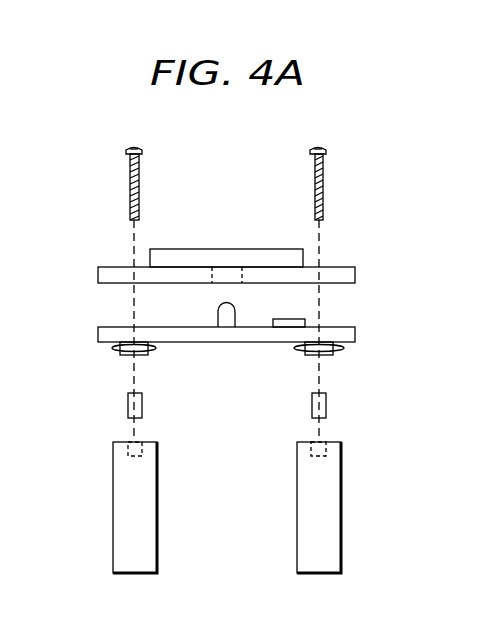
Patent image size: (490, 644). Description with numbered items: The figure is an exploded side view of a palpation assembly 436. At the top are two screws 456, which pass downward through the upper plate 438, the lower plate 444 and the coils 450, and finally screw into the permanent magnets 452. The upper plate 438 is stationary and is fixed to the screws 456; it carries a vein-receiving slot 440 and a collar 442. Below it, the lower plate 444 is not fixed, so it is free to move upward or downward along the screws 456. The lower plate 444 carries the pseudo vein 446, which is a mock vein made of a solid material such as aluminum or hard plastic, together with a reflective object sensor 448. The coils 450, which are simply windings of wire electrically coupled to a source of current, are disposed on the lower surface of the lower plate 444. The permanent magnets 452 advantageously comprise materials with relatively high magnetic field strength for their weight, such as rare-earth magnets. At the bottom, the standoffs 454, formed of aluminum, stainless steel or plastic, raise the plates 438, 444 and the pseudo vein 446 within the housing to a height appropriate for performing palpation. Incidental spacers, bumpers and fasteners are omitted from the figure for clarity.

The palpation assembly 436 is at (368, 193).
The upper plate 438 is at (115, 270).
The vein-receiving slot 440 is at (232, 272).
The collar 442 is at (170, 250).
The lower plate 444 is at (113, 332).
The pseudo vein 446 is at (218, 306).
The reflective object sensor 448 is at (283, 319).
The coils 450 is at (118, 347).
The permanent magnets 452 is at (128, 405).
The standoffs 454 is at (123, 514).
The screws 456 is at (130, 173).